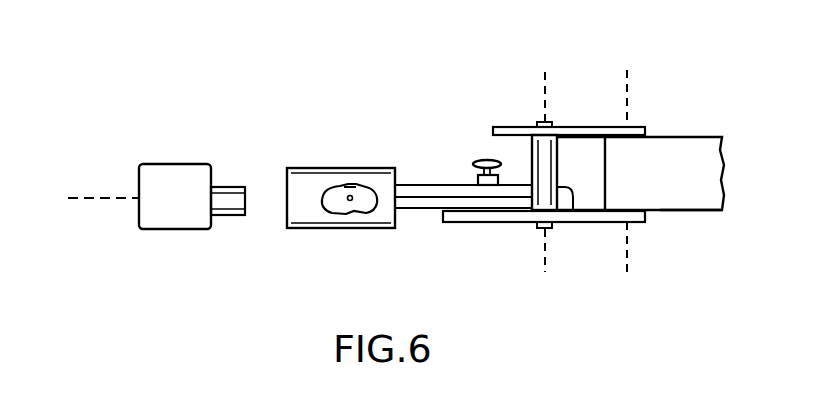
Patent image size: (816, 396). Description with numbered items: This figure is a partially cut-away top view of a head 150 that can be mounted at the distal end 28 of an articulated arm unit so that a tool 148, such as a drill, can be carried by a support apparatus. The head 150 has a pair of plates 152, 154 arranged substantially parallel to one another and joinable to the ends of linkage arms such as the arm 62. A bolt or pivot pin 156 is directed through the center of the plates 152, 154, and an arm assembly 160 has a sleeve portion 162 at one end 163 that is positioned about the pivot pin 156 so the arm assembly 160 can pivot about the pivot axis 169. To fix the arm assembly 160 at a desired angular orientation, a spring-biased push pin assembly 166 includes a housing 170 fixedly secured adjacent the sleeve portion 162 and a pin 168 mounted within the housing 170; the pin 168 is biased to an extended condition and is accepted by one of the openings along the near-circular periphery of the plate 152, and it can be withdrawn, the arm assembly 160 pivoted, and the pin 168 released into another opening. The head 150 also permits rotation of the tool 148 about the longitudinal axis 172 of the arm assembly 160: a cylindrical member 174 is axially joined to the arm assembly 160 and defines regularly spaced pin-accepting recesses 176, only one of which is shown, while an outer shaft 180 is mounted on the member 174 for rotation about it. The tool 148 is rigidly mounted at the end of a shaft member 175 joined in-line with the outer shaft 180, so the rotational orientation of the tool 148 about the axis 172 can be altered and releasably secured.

The distal end 28 is at (693, 212).
The arm 62 is at (677, 136).
The tool 148 is at (167, 229).
The head 150 is at (624, 52).
The plate 152 is at (648, 222).
The plate 154 is at (645, 130).
The pivot pin 156 is at (543, 124).
The arm assembly 160 is at (418, 212).
The sleeve portion 162 is at (570, 212).
The end of the arm assembly 163 is at (505, 213).
The spring-biased push pin assembly 166 is at (428, 119).
The pin 168 is at (487, 160).
The pivot axis 169 is at (540, 262).
The housing 170 is at (474, 183).
The longitudinal axis 172 is at (92, 198).
The cylindrical member 174 is at (352, 209).
The shaft member 175 is at (226, 187).
The pin-accepting recess 176 is at (350, 197).
The outer shaft 180 is at (288, 232).